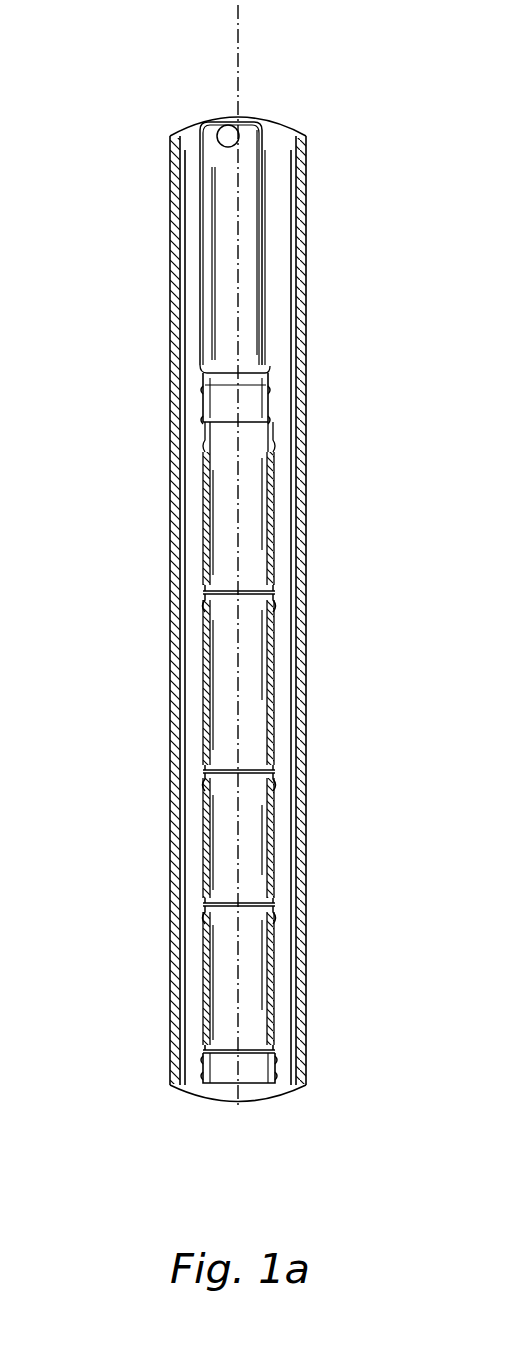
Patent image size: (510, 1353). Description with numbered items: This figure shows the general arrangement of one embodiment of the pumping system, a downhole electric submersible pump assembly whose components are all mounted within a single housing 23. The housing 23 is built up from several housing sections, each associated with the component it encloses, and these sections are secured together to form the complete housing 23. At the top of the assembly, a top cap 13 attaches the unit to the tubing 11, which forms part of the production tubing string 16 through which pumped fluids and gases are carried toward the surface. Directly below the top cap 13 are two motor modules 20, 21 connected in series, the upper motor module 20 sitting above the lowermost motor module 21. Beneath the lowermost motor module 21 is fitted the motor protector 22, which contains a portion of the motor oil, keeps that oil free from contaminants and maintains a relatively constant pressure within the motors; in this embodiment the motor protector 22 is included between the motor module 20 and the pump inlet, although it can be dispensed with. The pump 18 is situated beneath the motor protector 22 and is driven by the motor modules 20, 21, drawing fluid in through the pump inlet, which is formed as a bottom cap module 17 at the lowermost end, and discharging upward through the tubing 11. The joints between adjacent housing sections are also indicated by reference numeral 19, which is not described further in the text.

The tubing 11 is at (225, 250).
The production tubing string 16 is at (200, 323).
The top cap 13 is at (220, 413).
The housing 23 is at (205, 466).
The coupling 19 is at (210, 513).
The motor module 20 is at (222, 556).
The motor module 21 is at (225, 728).
The motor protector 22 is at (230, 805).
The pump 18 is at (230, 977).
The bottom cap module 17 is at (218, 1073).